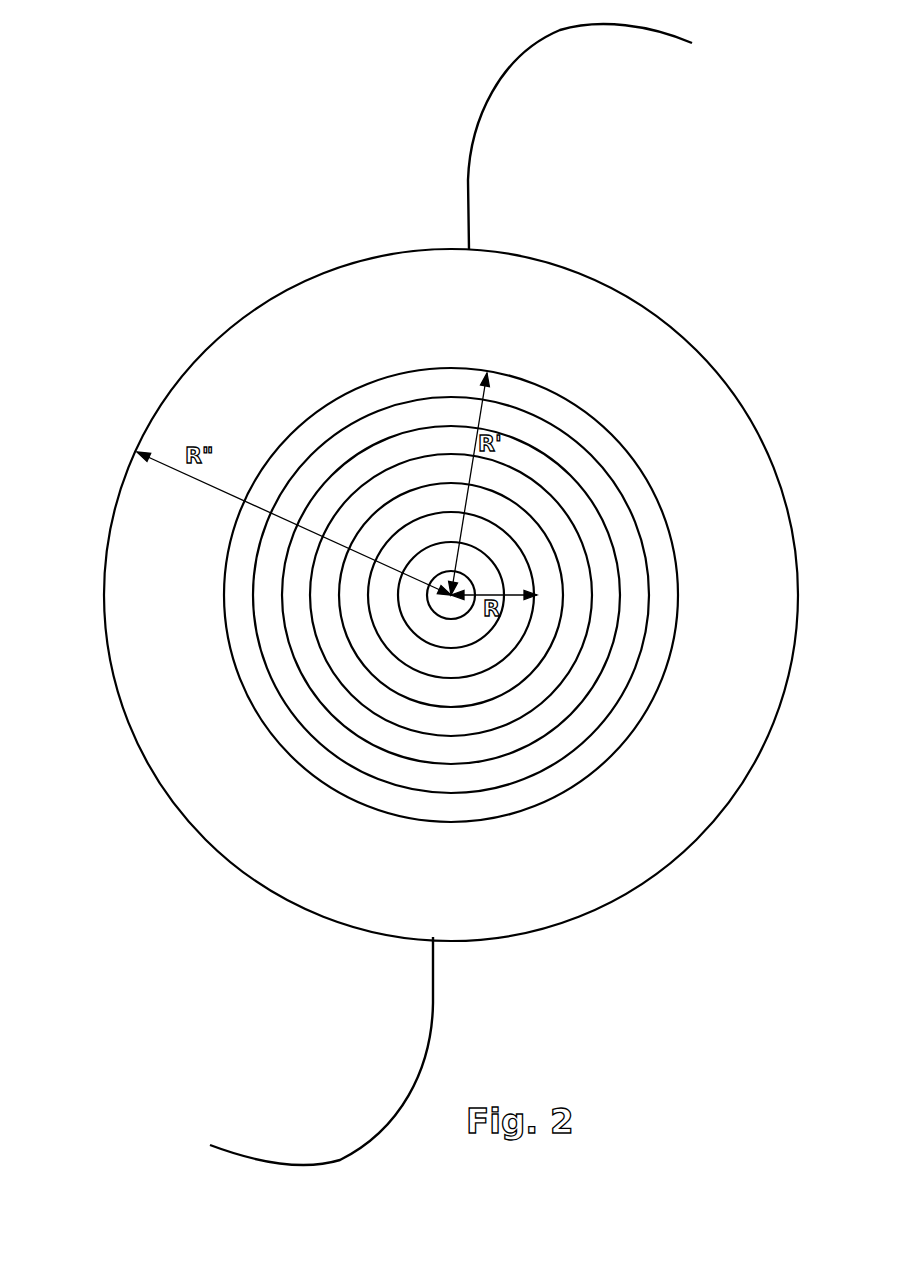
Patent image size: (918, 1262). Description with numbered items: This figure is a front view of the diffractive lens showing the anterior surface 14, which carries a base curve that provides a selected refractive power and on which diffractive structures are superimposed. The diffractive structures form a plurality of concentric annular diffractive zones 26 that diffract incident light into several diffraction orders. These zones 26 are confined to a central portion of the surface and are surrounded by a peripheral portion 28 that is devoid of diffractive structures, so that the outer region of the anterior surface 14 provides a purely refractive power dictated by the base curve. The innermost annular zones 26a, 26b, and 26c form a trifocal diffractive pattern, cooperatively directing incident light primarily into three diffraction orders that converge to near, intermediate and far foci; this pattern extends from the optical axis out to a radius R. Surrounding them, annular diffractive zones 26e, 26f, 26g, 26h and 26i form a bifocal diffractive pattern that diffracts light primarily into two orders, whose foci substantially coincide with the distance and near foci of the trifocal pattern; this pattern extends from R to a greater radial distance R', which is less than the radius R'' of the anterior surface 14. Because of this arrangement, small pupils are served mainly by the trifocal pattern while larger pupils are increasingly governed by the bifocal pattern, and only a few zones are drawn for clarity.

The anterior surface 14 is at (451, 594).
The peripheral portion 28 is at (680, 364).
The concentric annular diffractive zones 26 is at (385, 595).
The annular zone 26a is at (451, 595).
The annular zone 26b is at (451, 595).
The annular zone 26c is at (451, 595).
The annular diffractive zone 26e is at (451, 595).
The annular diffractive zone 26f is at (451, 595).
The annular diffractive zone 26g is at (451, 595).
The annular diffractive zone 26h is at (451, 595).
The annular diffractive zone 26i is at (451, 595).